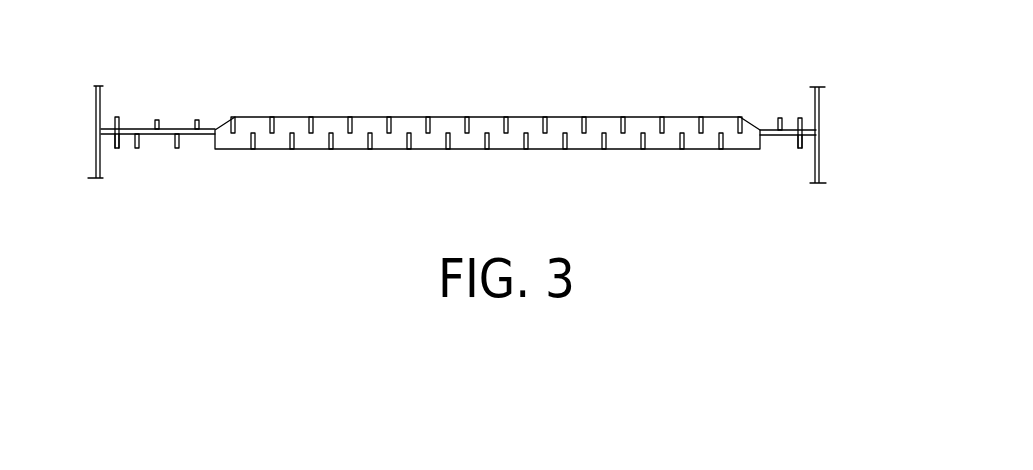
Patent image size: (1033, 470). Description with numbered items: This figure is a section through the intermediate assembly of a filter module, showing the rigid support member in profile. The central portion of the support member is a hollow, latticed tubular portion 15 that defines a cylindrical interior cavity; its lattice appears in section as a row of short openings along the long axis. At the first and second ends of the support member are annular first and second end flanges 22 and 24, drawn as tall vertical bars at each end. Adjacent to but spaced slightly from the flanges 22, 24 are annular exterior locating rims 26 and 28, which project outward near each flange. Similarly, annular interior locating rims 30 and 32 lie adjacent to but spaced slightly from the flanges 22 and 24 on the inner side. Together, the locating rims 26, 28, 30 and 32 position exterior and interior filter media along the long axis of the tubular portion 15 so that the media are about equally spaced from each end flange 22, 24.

The hollow latticed tubular portion 15 is at (462, 150).
The first end flange 22 is at (99, 86).
The second end flange 24 is at (818, 87).
The exterior locating rim 26 is at (118, 116).
The exterior locating rim 28 is at (800, 118).
The interior locating rim 30 is at (118, 148).
The interior locating rim 32 is at (800, 148).